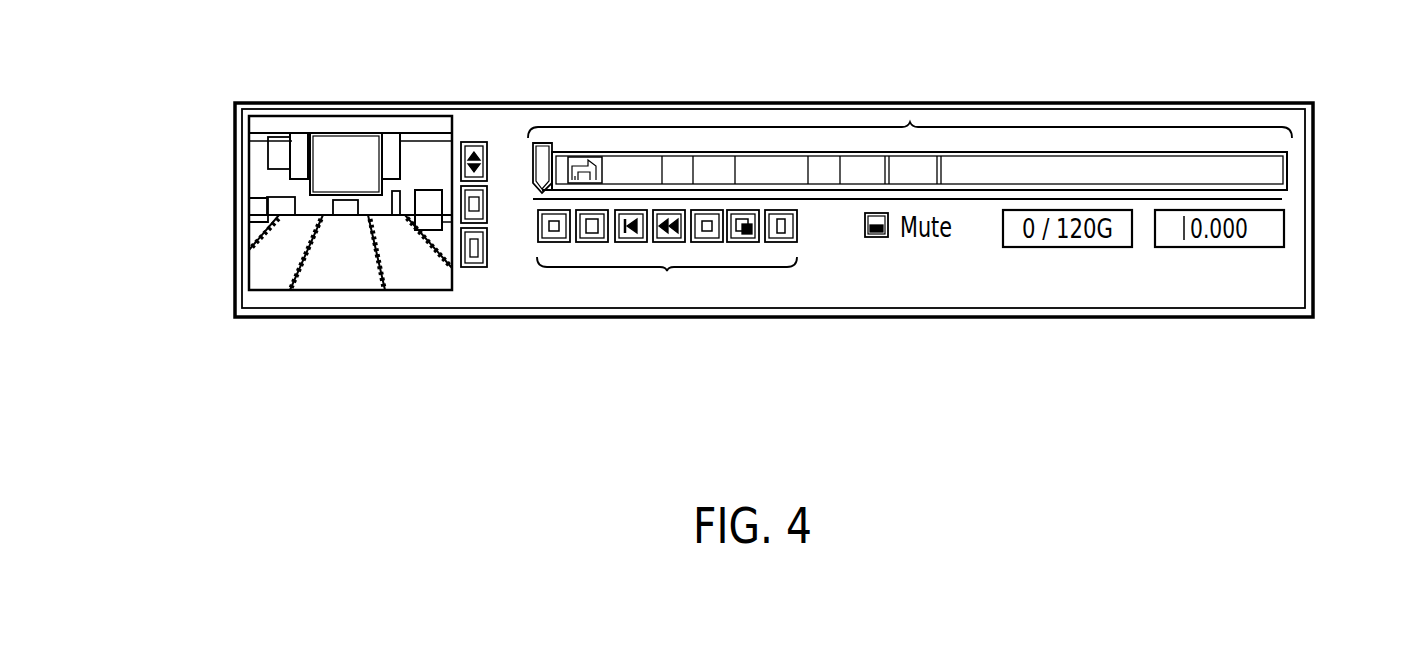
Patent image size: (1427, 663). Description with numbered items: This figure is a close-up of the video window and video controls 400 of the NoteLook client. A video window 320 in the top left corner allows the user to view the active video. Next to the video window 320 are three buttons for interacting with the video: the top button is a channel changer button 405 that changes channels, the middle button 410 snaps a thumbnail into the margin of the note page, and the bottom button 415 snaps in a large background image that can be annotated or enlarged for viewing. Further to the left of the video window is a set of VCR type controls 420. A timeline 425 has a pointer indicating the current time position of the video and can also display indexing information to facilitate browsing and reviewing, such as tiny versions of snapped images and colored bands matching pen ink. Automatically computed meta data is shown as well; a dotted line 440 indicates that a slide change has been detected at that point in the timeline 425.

The video window 320 is at (277, 260).
The video window and video controls 400 is at (1170, 438).
The channel changer button 405 is at (484, 147).
The middle button 410 is at (487, 205).
The bottom button 415 is at (475, 268).
The VCR type controls 420 is at (667, 271).
The timeline 425 is at (910, 124).
The dotted line 440 is at (1340, 195).